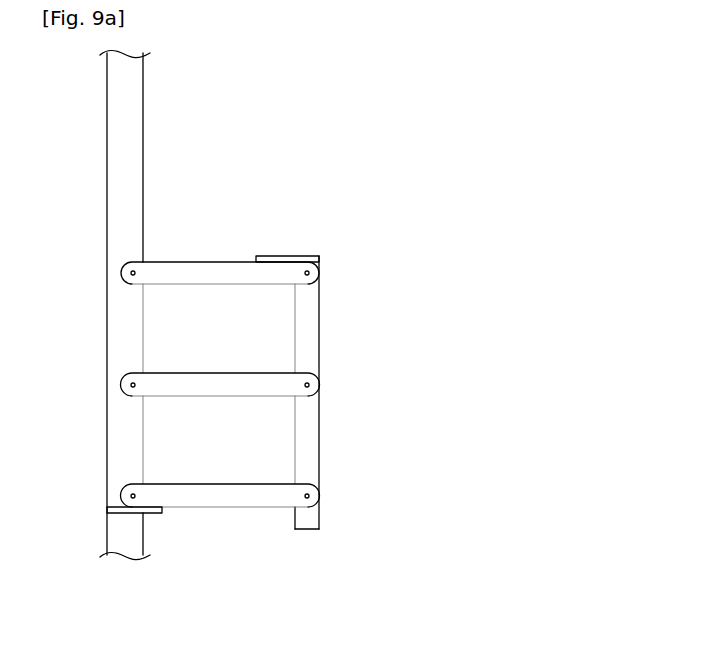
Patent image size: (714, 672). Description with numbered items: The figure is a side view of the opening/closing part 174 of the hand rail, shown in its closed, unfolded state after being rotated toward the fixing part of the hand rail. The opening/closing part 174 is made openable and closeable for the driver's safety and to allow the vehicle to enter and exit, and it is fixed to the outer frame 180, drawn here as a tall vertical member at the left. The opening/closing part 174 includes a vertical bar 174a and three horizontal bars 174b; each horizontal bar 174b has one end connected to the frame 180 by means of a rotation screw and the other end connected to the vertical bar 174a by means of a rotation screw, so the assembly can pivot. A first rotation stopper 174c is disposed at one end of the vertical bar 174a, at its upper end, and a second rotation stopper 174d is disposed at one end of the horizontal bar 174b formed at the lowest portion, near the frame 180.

The outer frame 180 is at (108, 152).
The opening/closing part 174 is at (272, 386).
The vertical bar 174a is at (319, 316).
The horizontal bars 174b is at (270, 378).
The first rotation stopper 174c is at (292, 257).
The second rotation stopper 174d is at (160, 513).